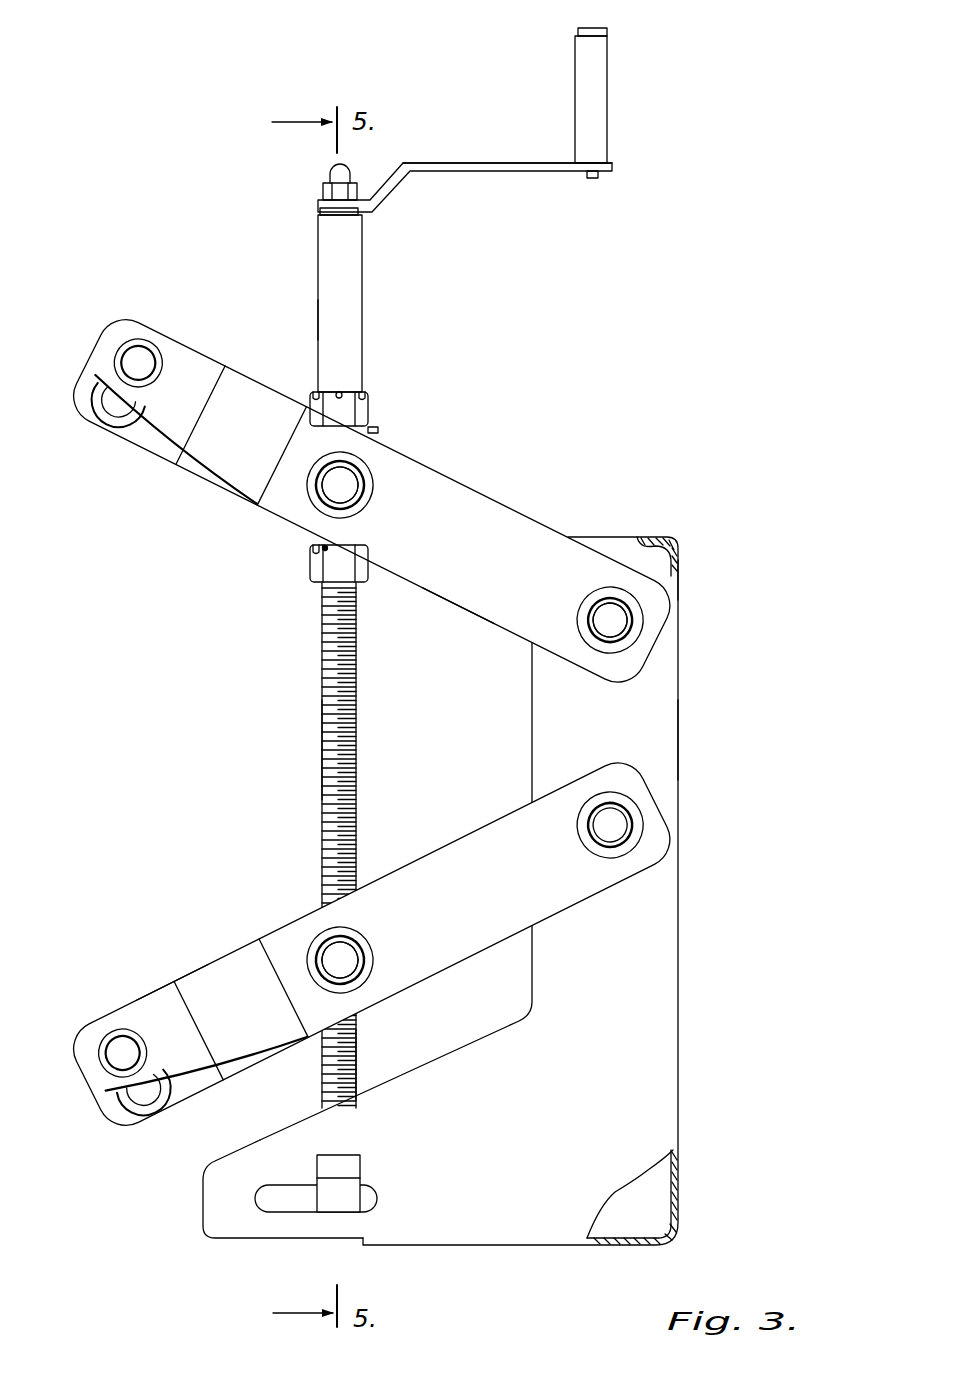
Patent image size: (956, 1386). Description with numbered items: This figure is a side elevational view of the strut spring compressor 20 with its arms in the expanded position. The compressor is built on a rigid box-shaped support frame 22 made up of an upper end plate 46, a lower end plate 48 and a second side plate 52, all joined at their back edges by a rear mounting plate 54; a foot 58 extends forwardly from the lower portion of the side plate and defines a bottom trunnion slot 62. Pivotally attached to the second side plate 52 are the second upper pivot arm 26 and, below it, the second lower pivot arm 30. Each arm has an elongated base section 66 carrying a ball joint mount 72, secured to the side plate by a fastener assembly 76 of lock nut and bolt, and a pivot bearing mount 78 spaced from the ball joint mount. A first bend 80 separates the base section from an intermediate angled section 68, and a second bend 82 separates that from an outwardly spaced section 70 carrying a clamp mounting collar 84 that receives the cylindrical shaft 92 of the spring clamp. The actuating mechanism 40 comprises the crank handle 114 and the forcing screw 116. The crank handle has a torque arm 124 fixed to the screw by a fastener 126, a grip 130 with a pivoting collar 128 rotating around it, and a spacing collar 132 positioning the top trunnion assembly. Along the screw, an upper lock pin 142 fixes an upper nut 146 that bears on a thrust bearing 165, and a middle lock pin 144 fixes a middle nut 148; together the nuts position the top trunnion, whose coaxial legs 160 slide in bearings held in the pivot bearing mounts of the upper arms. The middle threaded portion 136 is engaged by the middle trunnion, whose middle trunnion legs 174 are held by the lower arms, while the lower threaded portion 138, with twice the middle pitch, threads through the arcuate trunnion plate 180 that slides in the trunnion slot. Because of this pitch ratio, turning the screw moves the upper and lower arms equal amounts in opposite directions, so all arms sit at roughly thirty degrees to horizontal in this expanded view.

The strut spring compressor 20 is at (652, 352).
The support frame 22 is at (683, 912).
The second upper pivot arm 26 is at (512, 502).
The second lower pivot arm 30 is at (447, 836).
The actuating mechanism 40 is at (413, 312).
The upper end plate 46 is at (640, 537).
The lower end plate 48 is at (605, 1242).
The second side plate 52 is at (668, 748).
The rear mounting plate 54 is at (678, 1163).
The foot 58 is at (218, 1218).
The bottom trunnion slot 62 is at (370, 1200).
The elongated base section 66 is at (482, 603).
The intermediate angled section 68 is at (233, 965).
The outwardly spaced section 70 is at (175, 343).
The ball joint mount 72 is at (623, 645).
The fastener assembly 76 is at (618, 623).
The pivot bearing mount 78 is at (367, 477).
The first bend 80 is at (263, 945).
The second bend 82 is at (185, 997).
The clamp mounting collar 84 is at (113, 1033).
The cylindrical shaft 92 is at (118, 1058).
The crank handle 114 is at (498, 97).
The forcing screw 116 is at (318, 736).
The torque arm 124 is at (505, 177).
The fastener 126 is at (334, 175).
The pivoting collar 128 is at (598, 91).
The grip 130 is at (604, 29).
The spacing collar 132 is at (332, 289).
The middle threaded portion 136 is at (343, 777).
The lower threaded portion 138 is at (347, 1063).
The upper lock pin 142 is at (343, 393).
The middle lock pin 144 is at (313, 580).
The upper nut 146 is at (363, 407).
The middle nut 148 is at (318, 562).
The coaxial legs 160 is at (342, 487).
The thrust bearing 165 is at (380, 430).
The middle trunnion legs 174 is at (350, 947).
The arcuate trunnion plate 180 is at (340, 1165).